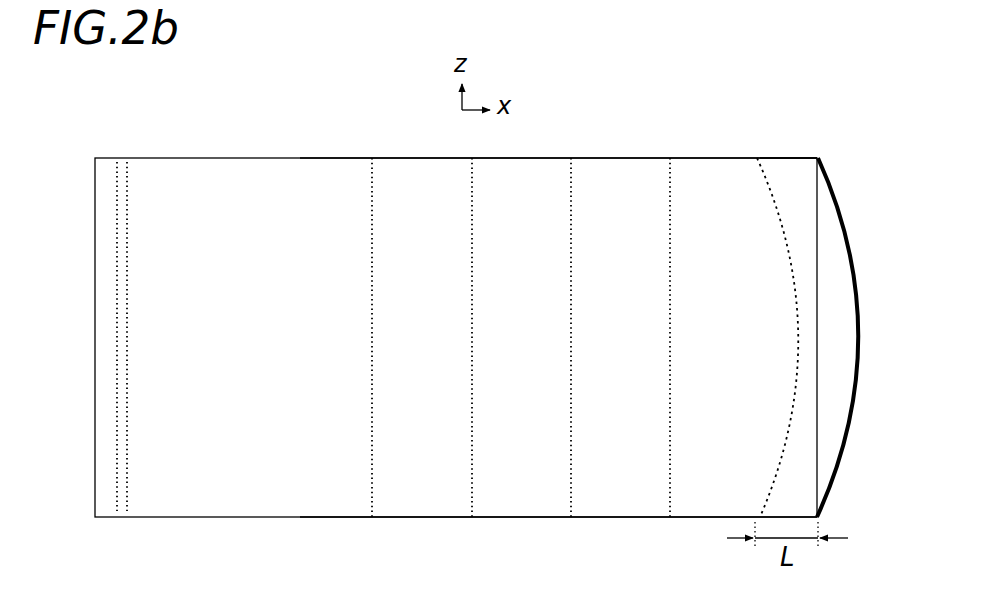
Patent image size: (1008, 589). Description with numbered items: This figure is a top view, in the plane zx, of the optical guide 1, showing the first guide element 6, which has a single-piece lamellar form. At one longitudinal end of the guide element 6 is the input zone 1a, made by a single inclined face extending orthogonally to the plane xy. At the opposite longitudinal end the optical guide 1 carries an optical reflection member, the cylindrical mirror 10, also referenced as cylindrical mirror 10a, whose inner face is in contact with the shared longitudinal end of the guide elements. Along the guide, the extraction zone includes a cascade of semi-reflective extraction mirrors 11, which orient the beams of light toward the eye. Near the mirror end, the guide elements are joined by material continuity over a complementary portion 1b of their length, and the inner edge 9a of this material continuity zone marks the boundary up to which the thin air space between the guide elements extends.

The optical guide 1 is at (309, 146).
The input zone 1a is at (110, 417).
The complementary portion 1b is at (795, 178).
The first guide element 6 is at (262, 348).
The inner edge 9a is at (781, 444).
The cylindrical mirror 10 is at (841, 204).
The cylindrical mirror 10a is at (853, 420).
The extraction mirror 11 is at (476, 240).